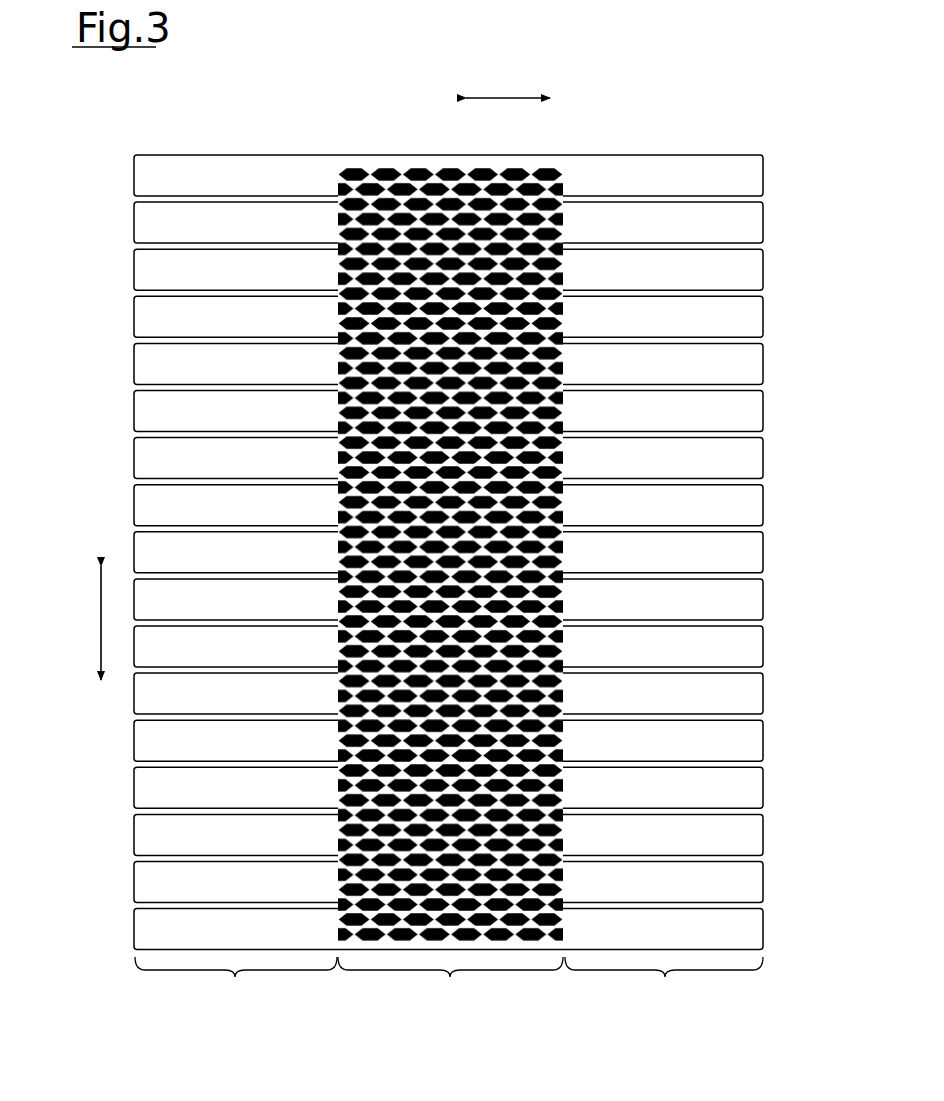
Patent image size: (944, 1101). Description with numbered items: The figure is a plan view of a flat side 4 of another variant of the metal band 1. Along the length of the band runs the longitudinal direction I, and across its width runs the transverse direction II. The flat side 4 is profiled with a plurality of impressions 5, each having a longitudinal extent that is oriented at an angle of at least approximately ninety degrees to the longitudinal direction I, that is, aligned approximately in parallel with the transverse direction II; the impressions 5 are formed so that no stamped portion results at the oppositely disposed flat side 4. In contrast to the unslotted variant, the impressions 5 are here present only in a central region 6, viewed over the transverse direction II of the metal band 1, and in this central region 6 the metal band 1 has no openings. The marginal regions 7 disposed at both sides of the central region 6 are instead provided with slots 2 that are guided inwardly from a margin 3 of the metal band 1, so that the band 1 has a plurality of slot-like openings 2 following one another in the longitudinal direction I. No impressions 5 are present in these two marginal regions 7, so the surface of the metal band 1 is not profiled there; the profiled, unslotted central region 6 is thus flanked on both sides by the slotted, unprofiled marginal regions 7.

The metal band 1 is at (606, 127).
The slots 2 is at (133, 252).
The margin 3 is at (133, 176).
The flat side 4 is at (670, 178).
The impressions 5 is at (432, 167).
The central region 6 is at (450, 983).
The marginal regions 7 is at (449, 983).
The longitudinal direction I is at (101, 628).
The transverse direction II is at (508, 98).